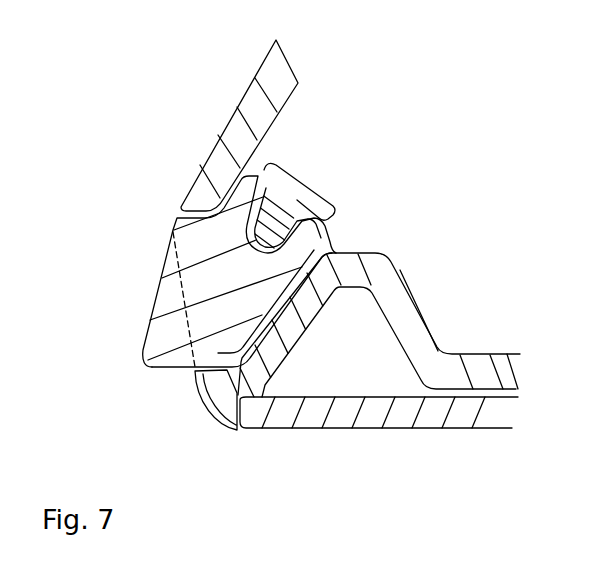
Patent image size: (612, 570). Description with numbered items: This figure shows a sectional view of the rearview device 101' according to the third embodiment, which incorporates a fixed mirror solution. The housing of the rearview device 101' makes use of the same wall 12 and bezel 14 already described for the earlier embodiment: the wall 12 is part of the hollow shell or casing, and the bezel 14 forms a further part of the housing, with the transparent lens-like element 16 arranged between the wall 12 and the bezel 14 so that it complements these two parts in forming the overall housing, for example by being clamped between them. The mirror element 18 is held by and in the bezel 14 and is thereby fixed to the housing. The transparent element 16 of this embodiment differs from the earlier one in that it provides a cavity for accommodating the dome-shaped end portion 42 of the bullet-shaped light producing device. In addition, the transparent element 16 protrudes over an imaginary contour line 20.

The rearview device 101' is at (275, 254).
The wall 12 is at (236, 113).
The bezel 14 is at (383, 285).
The transparent element 16 is at (167, 303).
The mirror element 18 is at (400, 408).
The imaginary contour line 20 is at (190, 345).
The dome-shaped end portion 42 is at (297, 187).